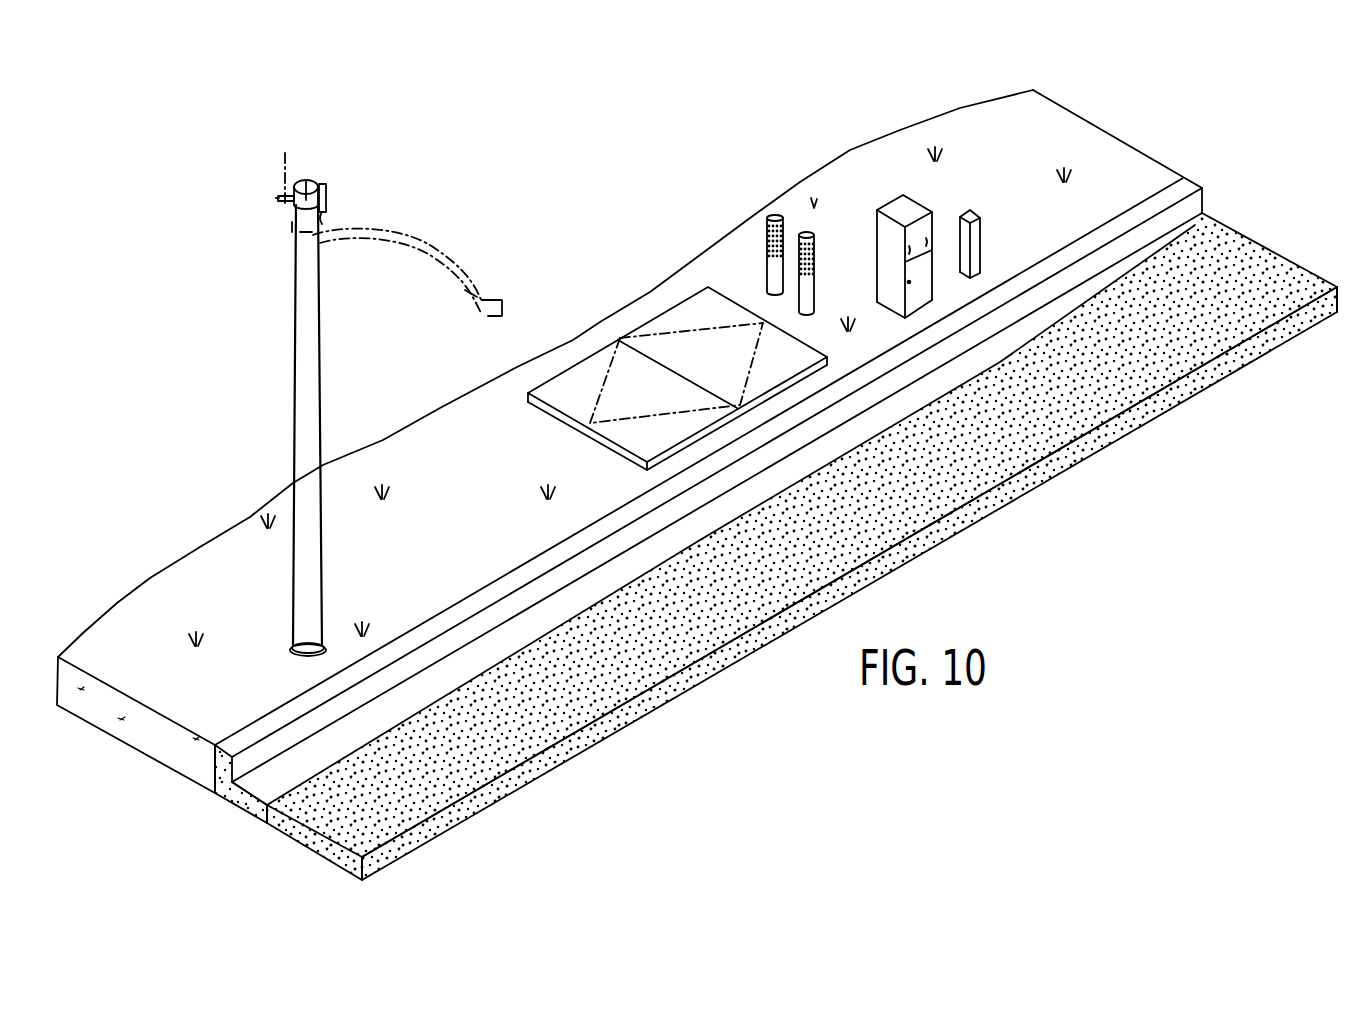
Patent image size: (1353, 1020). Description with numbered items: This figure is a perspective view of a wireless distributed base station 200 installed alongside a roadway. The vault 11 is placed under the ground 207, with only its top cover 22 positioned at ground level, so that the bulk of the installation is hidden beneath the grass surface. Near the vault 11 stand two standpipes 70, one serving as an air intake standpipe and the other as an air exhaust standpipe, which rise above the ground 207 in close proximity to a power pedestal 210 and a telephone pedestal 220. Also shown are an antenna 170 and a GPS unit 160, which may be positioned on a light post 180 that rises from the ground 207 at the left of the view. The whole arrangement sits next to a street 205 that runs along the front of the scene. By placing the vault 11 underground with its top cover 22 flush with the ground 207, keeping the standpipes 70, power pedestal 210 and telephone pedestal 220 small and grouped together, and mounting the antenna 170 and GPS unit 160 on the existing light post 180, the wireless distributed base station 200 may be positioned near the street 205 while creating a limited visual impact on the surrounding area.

The wireless distributed base station 200 is at (458, 114).
The antenna 170 is at (283, 172).
The GPS unit 160 is at (325, 200).
The light post 180 is at (292, 418).
The ground 207 is at (515, 468).
The top cover 22 is at (577, 383).
The vault 11 is at (700, 308).
The air intake standpipe and air exhaust standpipe 70 is at (810, 235).
The power pedestal 210 is at (892, 207).
The telephone pedestal 220 is at (973, 217).
The street 205 is at (1276, 272).